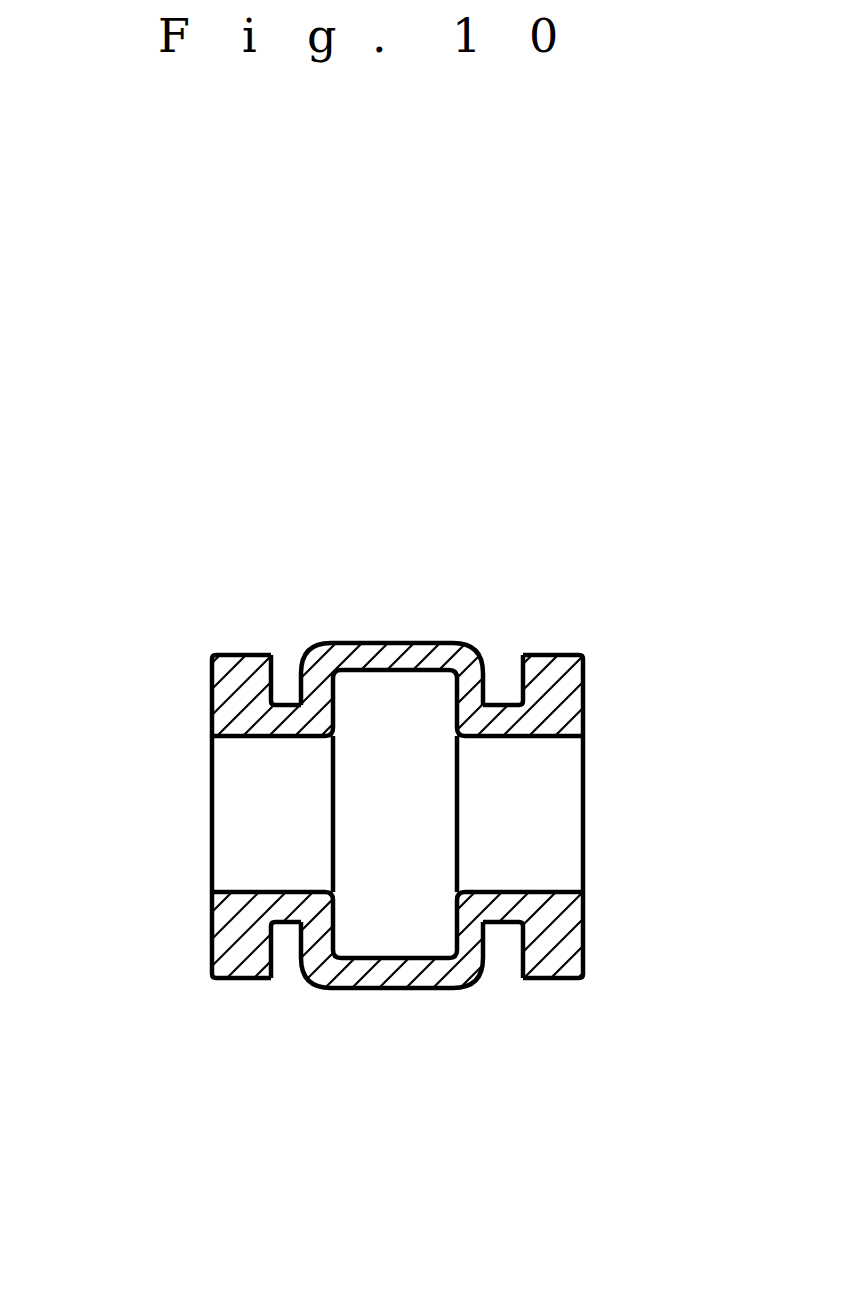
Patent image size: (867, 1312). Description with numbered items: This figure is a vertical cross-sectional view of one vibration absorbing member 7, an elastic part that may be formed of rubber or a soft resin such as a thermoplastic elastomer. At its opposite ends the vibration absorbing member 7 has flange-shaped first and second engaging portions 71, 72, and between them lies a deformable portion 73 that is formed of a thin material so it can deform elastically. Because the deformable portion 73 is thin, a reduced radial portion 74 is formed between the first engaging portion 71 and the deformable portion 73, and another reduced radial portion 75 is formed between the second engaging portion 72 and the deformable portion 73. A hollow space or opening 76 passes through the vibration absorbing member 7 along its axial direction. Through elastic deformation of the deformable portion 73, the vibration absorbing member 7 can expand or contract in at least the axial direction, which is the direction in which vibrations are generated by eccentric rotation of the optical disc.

The vibration absorbing member 7 is at (148, 638).
The first engaging portion 71 is at (238, 960).
The second engaging portion 72 is at (555, 967).
The deformable portion 73 is at (402, 990).
The reduced radial portion 74 is at (282, 712).
The reduced radial portion 75 is at (510, 712).
The hollow space or opening 76 is at (520, 817).